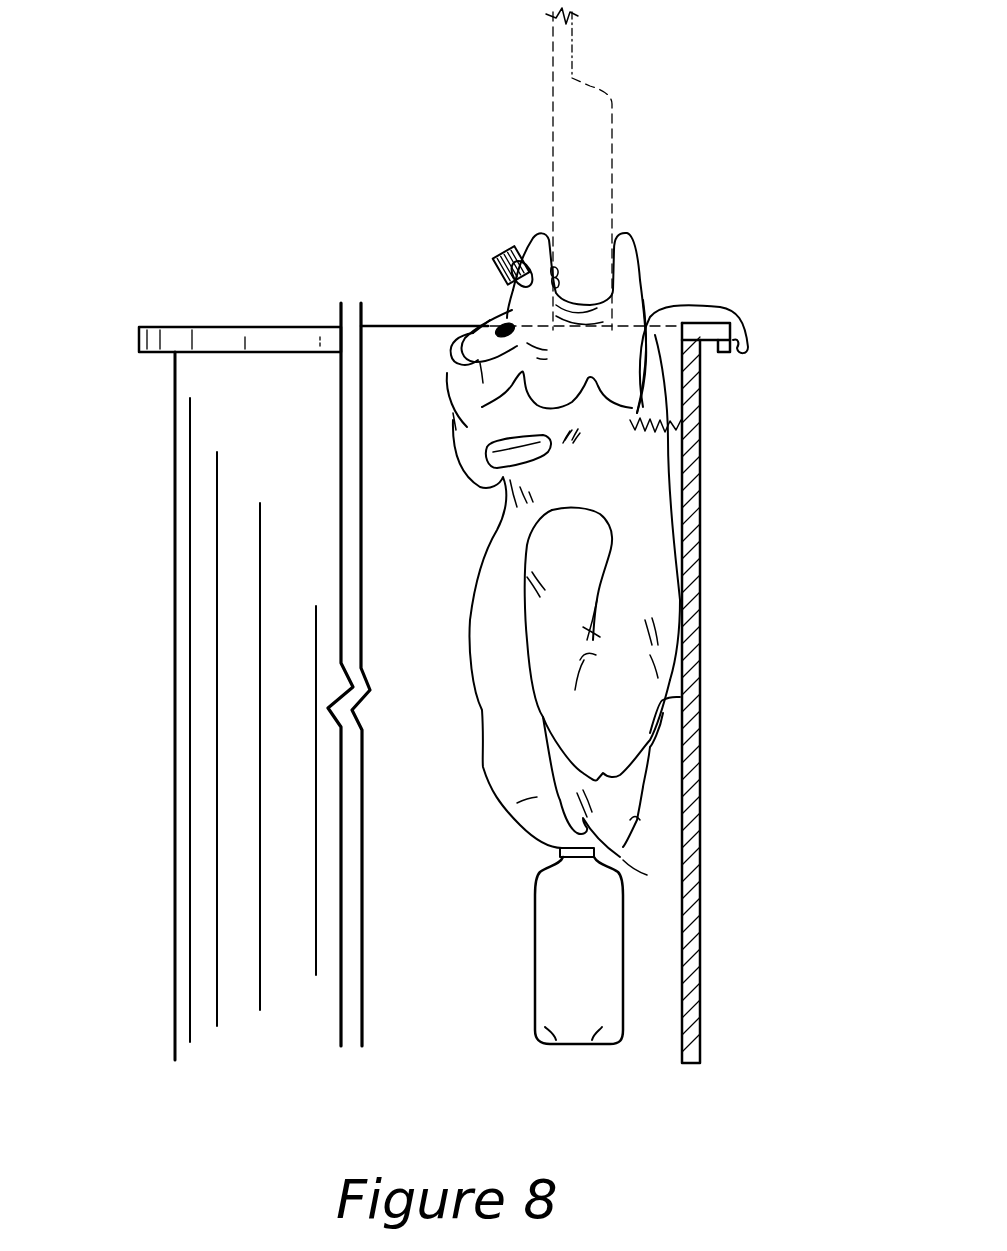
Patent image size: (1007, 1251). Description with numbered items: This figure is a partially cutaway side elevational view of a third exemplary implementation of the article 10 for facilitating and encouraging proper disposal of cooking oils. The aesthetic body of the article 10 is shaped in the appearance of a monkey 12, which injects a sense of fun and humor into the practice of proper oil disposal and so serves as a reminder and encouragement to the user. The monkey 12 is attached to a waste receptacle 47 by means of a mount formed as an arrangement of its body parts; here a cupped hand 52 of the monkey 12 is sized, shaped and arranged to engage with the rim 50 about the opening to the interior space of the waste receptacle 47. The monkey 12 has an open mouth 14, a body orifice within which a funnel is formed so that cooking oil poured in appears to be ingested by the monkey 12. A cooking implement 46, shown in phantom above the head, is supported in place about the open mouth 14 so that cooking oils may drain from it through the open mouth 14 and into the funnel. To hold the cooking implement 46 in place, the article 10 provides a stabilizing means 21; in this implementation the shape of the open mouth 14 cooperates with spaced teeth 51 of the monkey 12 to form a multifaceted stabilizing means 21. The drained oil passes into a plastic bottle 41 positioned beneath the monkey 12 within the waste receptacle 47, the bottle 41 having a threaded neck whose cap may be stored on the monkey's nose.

The article for facilitating and encouraging proper disposal of cooking oils 10 is at (301, 241).
The monkey 12 is at (497, 692).
The open mouth 14 is at (627, 247).
The stabilizing means 21 is at (645, 176).
The plastic bottle 41 is at (558, 958).
The cooking implement 46 is at (572, 149).
The waste receptacle 47 is at (238, 503).
The rim 50 is at (203, 345).
The spaced teeth 51 is at (553, 270).
The cupped hand 52 is at (703, 323).